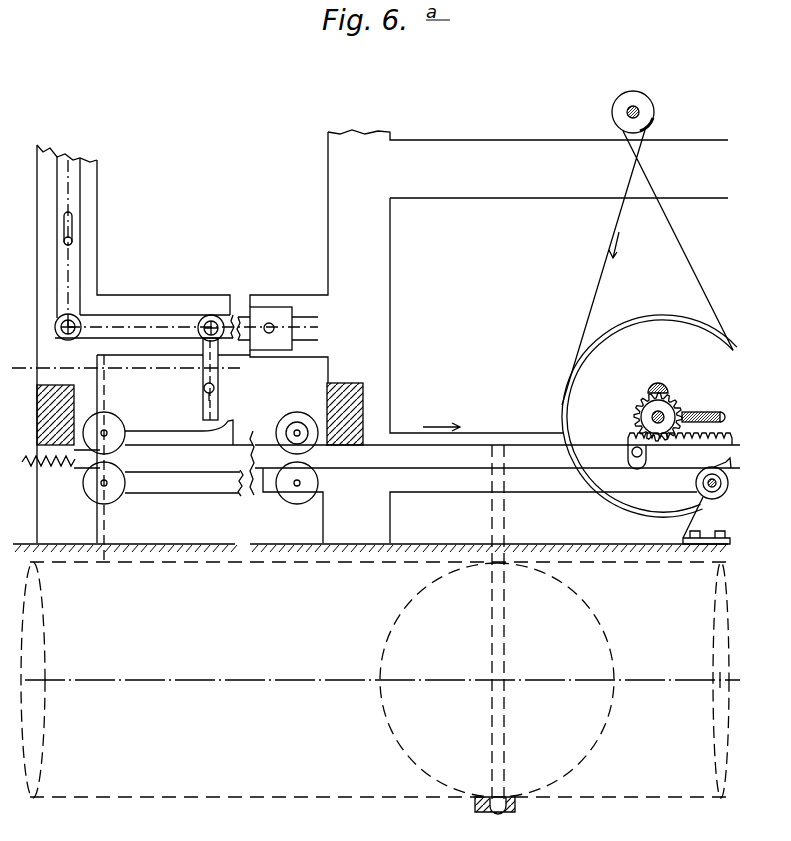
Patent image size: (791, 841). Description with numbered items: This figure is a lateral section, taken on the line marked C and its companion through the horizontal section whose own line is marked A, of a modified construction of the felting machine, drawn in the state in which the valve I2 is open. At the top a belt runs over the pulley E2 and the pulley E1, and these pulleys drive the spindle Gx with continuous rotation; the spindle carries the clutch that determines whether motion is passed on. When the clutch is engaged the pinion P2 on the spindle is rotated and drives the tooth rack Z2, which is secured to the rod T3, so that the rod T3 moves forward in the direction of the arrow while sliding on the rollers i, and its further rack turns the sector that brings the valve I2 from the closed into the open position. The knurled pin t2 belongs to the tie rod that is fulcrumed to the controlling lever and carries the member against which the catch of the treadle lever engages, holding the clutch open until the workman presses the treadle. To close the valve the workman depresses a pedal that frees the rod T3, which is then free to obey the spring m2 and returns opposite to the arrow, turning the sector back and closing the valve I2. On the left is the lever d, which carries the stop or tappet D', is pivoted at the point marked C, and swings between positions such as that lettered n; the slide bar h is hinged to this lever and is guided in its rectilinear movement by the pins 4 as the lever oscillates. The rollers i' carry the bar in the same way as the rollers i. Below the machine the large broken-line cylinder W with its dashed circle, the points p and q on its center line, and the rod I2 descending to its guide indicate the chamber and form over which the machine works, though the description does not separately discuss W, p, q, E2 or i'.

The slide bar h is at (80, 208).
The pins 4 is at (72, 243).
The lever d is at (152, 318).
The section line C—D C is at (55, 327).
The section line A—B A is at (125, 356).
The lever position n is at (318, 331).
The stop or tappet D' is at (230, 379).
The upper rollers i' is at (200, 441).
The spring m2 is at (48, 478).
The rod T3 is at (432, 447).
The guide pulley E2 is at (636, 91).
The pulley E1 is at (649, 403).
The pinion P2 is at (641, 417).
The spindle Gx is at (664, 411).
The tie rod t2 is at (718, 413).
The tooth rack Z2 is at (688, 441).
The rollers i is at (407, 501).
The web roll W is at (380, 680).
The roll position p is at (438, 680).
The valve I2 is at (504, 629).
The roll position q is at (563, 680).